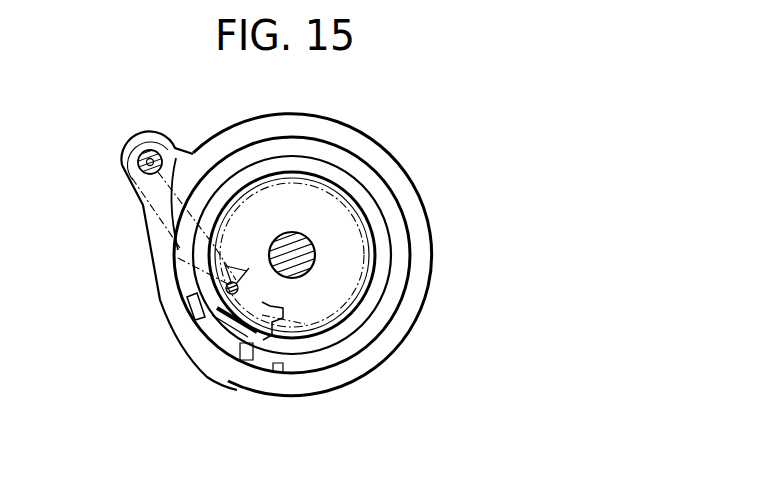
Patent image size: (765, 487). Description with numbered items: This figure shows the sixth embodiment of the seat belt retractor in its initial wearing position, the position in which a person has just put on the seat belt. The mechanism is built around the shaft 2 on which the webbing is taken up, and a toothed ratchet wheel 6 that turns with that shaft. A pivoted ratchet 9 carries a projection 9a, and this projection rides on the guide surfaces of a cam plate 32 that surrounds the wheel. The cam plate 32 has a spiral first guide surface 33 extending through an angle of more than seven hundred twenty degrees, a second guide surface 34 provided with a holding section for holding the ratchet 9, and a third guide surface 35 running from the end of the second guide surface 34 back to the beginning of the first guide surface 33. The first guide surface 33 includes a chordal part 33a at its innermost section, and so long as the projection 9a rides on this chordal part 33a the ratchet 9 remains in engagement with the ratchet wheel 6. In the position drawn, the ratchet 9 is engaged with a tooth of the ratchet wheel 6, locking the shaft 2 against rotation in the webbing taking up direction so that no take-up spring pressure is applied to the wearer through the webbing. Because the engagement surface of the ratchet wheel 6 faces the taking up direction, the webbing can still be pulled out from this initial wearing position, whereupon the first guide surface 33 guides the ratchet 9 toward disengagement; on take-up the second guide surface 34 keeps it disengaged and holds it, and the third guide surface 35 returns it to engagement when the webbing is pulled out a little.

The shaft 2 is at (315, 254).
The ratchet wheel 6 is at (378, 334).
The ratchet 9 is at (165, 208).
The projection 9a is at (237, 281).
The cam plate 32 is at (398, 155).
The first guide surface 33 is at (330, 183).
The chordal part 33a is at (222, 322).
The second guide surface 34 is at (223, 313).
The third guide surface 35 is at (256, 314).